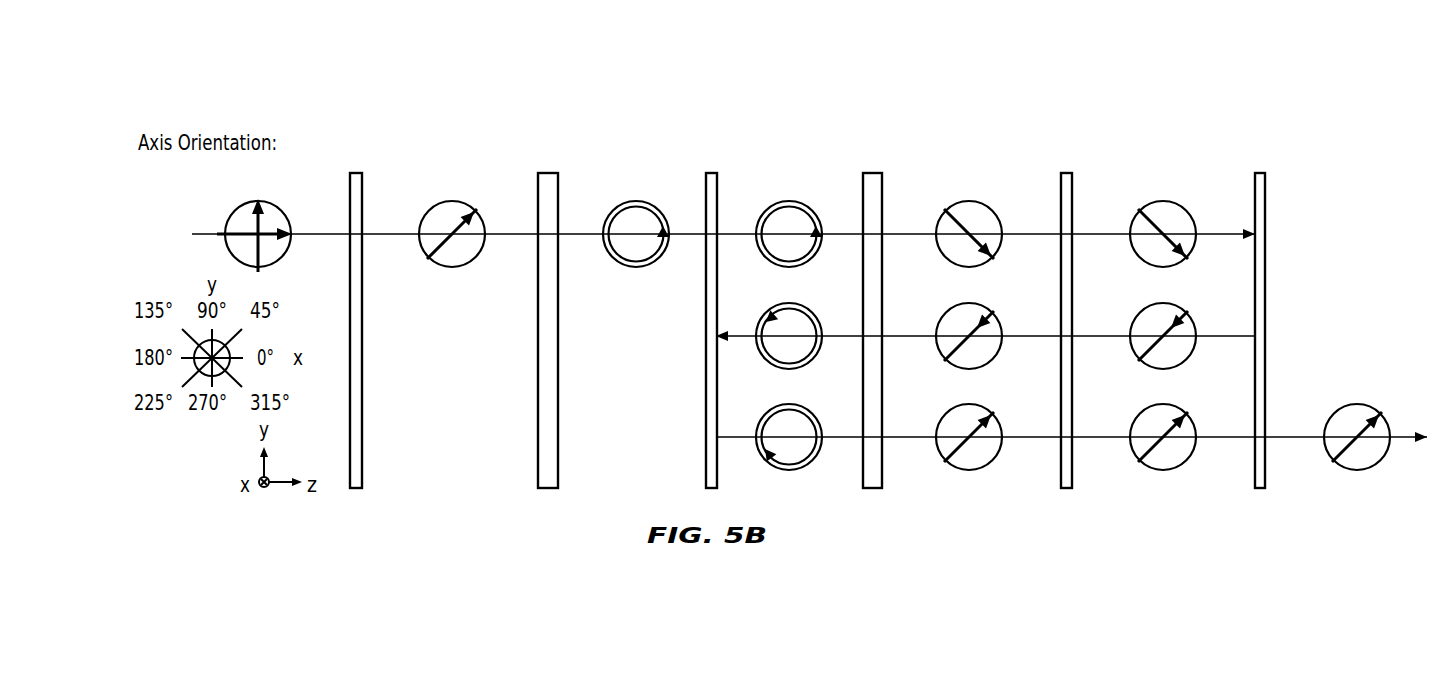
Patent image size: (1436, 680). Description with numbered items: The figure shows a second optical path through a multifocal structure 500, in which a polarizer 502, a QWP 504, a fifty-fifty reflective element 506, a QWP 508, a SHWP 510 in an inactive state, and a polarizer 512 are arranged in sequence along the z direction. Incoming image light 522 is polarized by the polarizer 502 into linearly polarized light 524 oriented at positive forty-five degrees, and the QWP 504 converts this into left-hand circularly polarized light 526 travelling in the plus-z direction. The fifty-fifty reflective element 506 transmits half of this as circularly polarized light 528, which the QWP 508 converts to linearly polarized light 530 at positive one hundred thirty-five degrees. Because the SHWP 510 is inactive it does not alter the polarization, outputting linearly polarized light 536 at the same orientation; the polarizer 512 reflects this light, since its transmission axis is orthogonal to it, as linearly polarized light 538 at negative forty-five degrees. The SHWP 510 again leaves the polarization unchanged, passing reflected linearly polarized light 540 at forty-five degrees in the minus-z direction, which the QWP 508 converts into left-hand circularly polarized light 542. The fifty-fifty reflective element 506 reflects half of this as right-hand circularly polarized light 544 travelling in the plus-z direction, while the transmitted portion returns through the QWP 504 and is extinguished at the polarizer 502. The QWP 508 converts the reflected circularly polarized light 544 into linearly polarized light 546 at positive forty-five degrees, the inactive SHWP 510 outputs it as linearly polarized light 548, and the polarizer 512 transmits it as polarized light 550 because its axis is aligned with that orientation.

The multifocal structure 500 is at (1424, 28).
The polarizer 502 is at (355, 273).
The QWP 504 is at (547, 273).
The 50:50 reflective element 506 is at (710, 259).
The QWP 508 is at (872, 273).
The SHWP 510 is at (1065, 245).
The polarizer 512 is at (1258, 273).
The image light 522 is at (237, 225).
The linearly polarized light 524 is at (454, 223).
The circularly polarized light 526 is at (637, 223).
The circularly polarized light 528 is at (794, 223).
The linearly polarized light 530 is at (975, 223).
The linearly polarized light 536 is at (1167, 223).
The linearly polarized light 538 is at (1167, 327).
The reflected linearly polarized light 540 is at (975, 327).
The circularly polarized light 542 is at (793, 327).
The reflected circularly polarized light 544 is at (793, 428).
The linearly polarized light 546 is at (976, 428).
The linearly polarized light 548 is at (1166, 428).
The polarized light 550 is at (1358, 428).